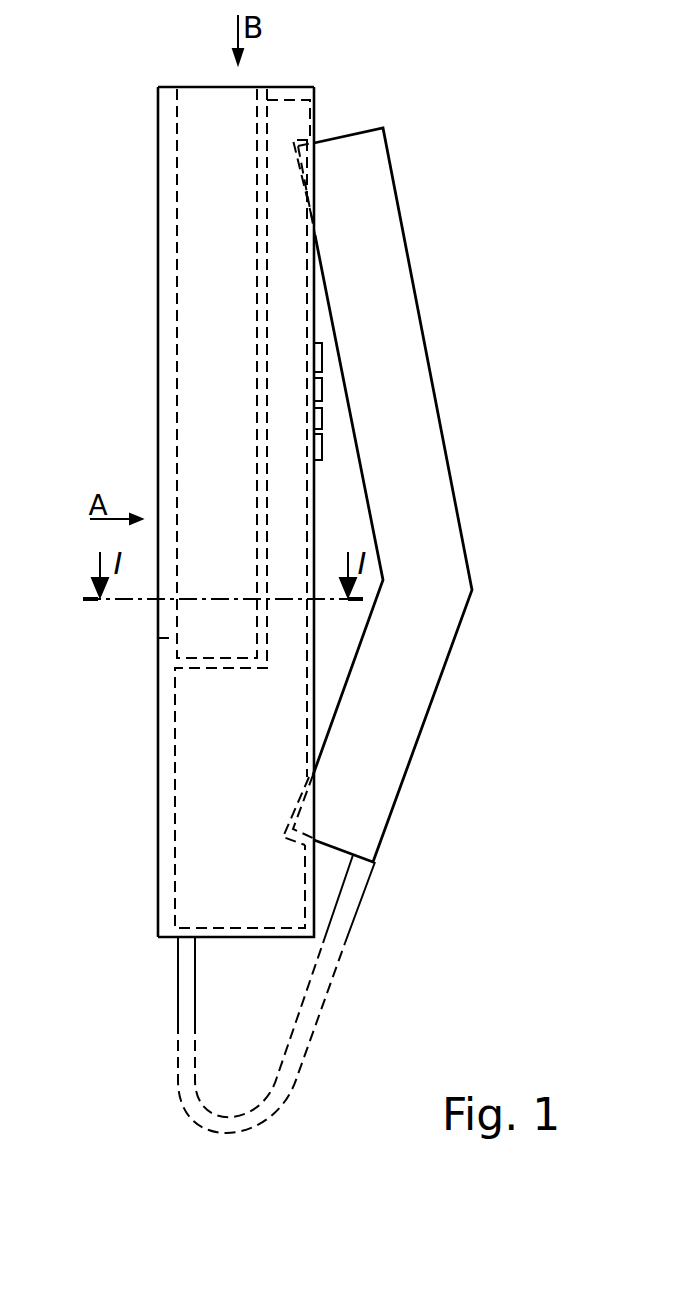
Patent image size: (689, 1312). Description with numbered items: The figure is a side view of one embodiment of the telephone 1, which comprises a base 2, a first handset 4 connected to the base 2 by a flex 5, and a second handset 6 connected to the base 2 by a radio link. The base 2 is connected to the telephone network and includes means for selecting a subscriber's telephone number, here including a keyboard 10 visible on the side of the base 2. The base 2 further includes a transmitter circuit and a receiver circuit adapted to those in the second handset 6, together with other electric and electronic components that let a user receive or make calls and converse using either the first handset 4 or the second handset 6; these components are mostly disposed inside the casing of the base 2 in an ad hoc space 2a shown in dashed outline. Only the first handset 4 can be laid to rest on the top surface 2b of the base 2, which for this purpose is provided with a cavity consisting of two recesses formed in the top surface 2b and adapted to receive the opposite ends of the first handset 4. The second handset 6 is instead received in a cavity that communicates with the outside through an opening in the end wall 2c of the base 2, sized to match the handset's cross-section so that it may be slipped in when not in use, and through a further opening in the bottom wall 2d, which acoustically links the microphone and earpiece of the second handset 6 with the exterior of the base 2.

The telephone 1 is at (281, 570).
The base 2 is at (163, 822).
The ad hoc space 2a is at (200, 774).
The top surface 2b is at (322, 117).
The end wall 2c is at (283, 82).
The bottom wall 2d is at (146, 392).
The first handset 4 is at (400, 752).
The flex 5 is at (185, 980).
The second handset 6 is at (193, 297).
The keyboard 10 is at (324, 469).